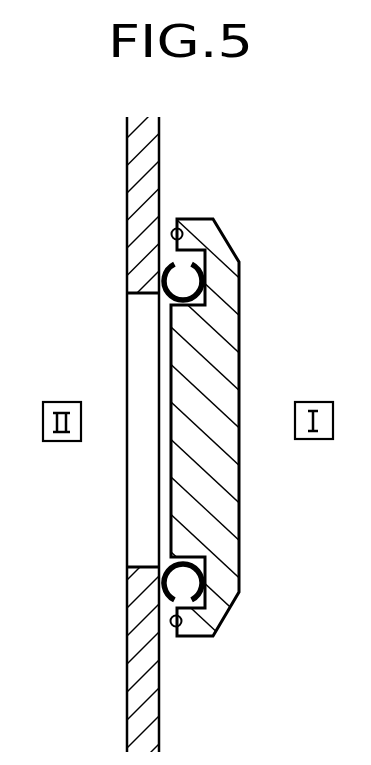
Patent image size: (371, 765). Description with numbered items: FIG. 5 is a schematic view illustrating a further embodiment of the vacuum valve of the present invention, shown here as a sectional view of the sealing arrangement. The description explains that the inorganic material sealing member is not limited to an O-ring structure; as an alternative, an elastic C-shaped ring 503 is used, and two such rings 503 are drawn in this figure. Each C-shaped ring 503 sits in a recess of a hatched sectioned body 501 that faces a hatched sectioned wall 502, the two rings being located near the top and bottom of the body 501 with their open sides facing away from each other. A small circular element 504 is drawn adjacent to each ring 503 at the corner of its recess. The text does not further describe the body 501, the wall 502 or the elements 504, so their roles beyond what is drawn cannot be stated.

The housing body 501 is at (232, 515).
The wall / panel 502 is at (132, 667).
The elastic C-shaped ring 503 is at (203, 283).
The pin / bead 504 is at (176, 228).